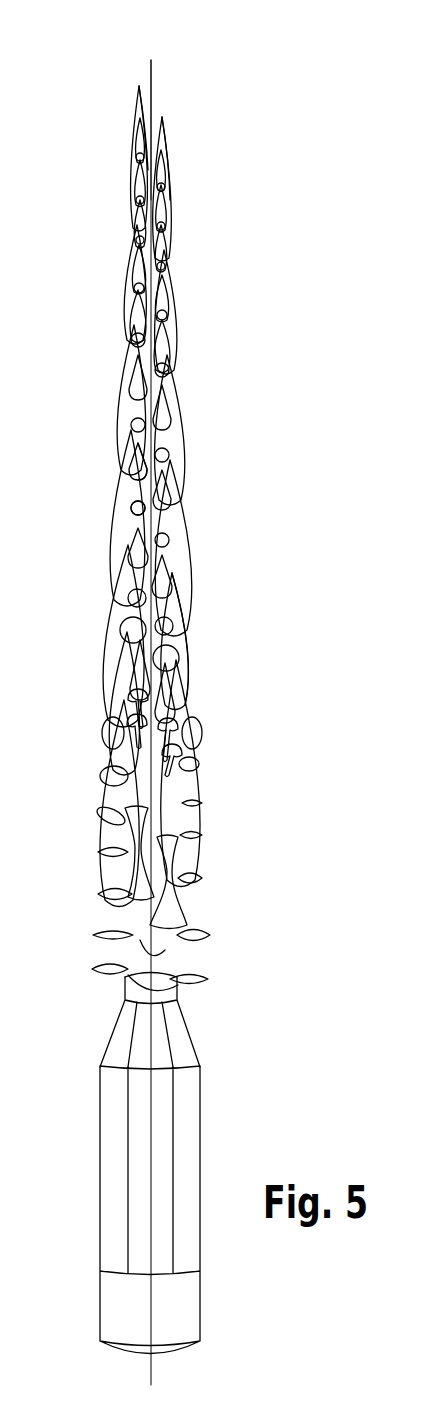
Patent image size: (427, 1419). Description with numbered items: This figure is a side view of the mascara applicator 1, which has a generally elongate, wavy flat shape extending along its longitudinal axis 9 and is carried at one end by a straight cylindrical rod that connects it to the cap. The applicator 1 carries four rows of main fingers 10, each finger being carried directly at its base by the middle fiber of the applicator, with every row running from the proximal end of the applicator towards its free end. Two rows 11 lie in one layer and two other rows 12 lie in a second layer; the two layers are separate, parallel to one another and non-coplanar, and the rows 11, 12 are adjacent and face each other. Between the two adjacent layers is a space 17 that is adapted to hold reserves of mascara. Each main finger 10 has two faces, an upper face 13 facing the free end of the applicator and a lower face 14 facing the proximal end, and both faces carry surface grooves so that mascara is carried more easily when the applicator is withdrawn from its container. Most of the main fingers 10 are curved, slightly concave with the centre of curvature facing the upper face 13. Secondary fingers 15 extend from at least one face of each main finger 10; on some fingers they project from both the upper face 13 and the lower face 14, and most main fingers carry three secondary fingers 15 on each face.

The applicator 1 is at (116, 157).
The longitudinal axis 9 is at (144, 75).
The main fingers 10 is at (138, 493).
The row of main fingers 11 is at (135, 88).
The row of main fingers 12 is at (165, 110).
The upper face 13 is at (201, 920).
The lower face 14 is at (186, 673).
The secondary fingers 15 is at (118, 541).
The space 17 is at (156, 96).